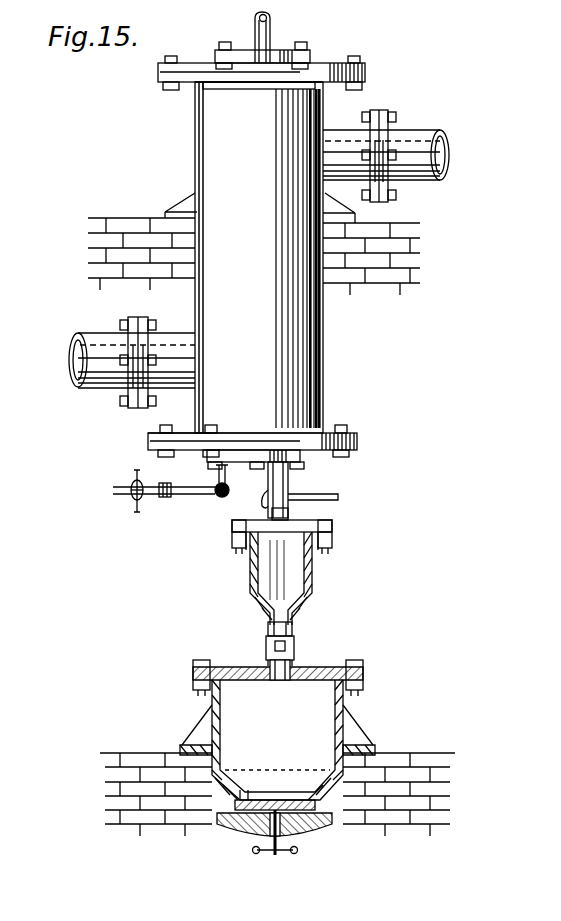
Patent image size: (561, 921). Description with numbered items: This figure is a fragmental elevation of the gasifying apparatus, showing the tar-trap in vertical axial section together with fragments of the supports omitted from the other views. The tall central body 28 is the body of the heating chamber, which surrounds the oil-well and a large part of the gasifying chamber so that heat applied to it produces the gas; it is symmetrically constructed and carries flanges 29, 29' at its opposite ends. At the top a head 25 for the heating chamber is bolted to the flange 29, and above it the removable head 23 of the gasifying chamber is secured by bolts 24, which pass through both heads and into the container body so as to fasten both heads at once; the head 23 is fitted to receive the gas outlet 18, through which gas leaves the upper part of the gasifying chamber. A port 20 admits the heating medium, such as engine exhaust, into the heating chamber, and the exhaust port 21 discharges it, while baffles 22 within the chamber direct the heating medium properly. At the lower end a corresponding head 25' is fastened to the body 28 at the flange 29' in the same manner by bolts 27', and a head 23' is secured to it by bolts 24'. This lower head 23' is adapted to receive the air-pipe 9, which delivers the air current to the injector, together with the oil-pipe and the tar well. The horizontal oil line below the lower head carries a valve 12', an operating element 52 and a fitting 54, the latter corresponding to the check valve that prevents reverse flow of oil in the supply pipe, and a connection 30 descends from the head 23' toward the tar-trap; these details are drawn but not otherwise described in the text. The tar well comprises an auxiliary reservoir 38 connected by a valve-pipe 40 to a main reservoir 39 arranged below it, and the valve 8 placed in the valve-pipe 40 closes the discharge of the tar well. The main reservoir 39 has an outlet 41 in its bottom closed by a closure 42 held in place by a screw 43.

The valve 8 is at (266, 646).
The air-pipe 9 is at (326, 499).
The valve 12' is at (171, 492).
The gas outlet 18 is at (272, 30).
The port 20 is at (450, 157).
The exhaust port 21 is at (70, 358).
The baffles 22 is at (178, 52).
The removable head 23 is at (289, 49).
The head 23' is at (297, 462).
The bolts 24 is at (255, 44).
The bolts 24' is at (233, 470).
The head for the heating chamber 25 is at (285, 72).
The head 25' is at (273, 442).
The bolts 27' is at (155, 437).
The body of the heating chamber 28 is at (259, 257).
The flange 29 is at (302, 90).
The flange 29' is at (151, 444).
The outlet pipe 30 is at (290, 482).
The auxiliary reservoir 38 is at (288, 568).
The main reservoir 39 is at (277, 730).
The valve-pipe 40 is at (292, 628).
The outlet 41 is at (272, 800).
The closure 42 is at (243, 825).
The screw 43 is at (276, 855).
The hand wheel 52 is at (135, 494).
The check valve 54 is at (165, 497).